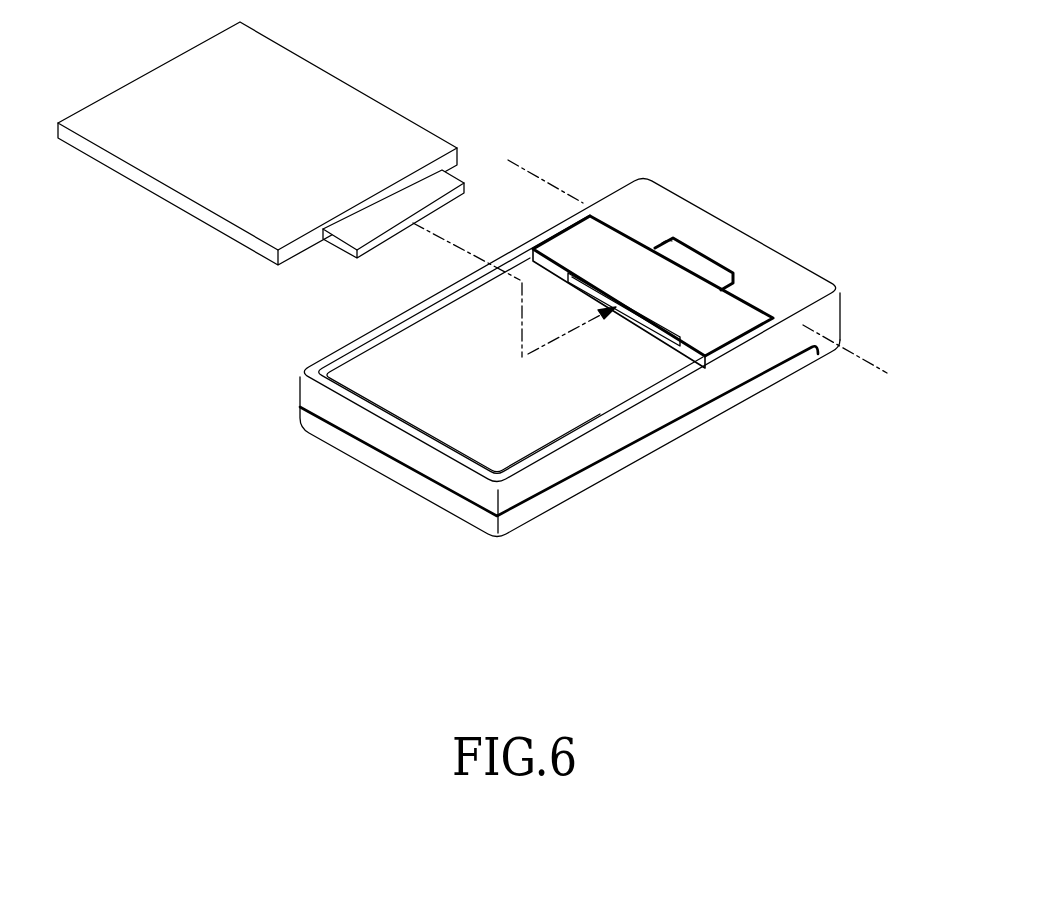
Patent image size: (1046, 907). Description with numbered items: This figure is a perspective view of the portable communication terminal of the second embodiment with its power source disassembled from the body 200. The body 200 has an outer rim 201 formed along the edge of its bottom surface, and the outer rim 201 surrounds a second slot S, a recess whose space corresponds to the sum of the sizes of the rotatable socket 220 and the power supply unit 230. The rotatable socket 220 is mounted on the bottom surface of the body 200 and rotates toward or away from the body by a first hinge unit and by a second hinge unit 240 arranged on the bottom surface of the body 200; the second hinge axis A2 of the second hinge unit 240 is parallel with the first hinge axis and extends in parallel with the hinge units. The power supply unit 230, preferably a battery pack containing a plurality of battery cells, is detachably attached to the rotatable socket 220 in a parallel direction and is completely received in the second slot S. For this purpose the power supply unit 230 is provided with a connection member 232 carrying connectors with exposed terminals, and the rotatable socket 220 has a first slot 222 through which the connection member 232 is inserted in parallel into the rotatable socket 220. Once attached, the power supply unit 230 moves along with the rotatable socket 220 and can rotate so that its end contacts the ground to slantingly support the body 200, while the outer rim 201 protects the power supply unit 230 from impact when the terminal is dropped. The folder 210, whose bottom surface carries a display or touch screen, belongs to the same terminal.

The body 200 is at (848, 306).
The outer rim 201 is at (330, 355).
The folder 210 is at (652, 446).
The rotatable socket 220 is at (615, 248).
The first slot 222 is at (655, 333).
The power supply unit 230 is at (390, 122).
The connection member 232 is at (355, 233).
The second hinge unit 240 is at (693, 260).
The second slot S is at (502, 440).
The second hinge axis A2 is at (669, 272).